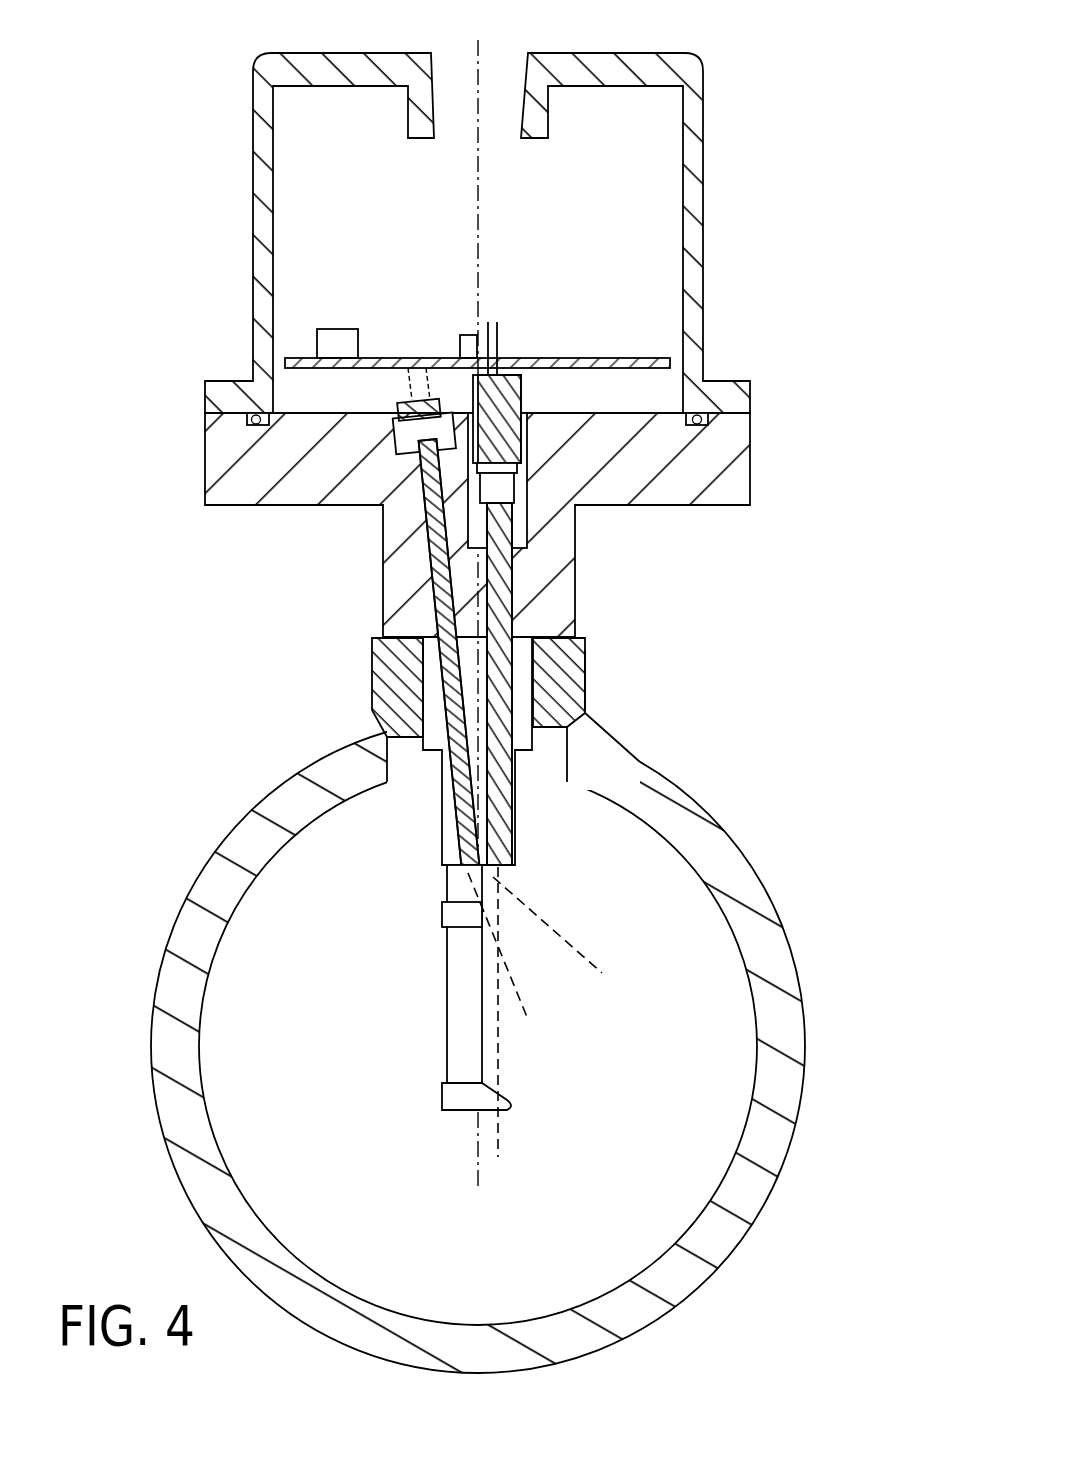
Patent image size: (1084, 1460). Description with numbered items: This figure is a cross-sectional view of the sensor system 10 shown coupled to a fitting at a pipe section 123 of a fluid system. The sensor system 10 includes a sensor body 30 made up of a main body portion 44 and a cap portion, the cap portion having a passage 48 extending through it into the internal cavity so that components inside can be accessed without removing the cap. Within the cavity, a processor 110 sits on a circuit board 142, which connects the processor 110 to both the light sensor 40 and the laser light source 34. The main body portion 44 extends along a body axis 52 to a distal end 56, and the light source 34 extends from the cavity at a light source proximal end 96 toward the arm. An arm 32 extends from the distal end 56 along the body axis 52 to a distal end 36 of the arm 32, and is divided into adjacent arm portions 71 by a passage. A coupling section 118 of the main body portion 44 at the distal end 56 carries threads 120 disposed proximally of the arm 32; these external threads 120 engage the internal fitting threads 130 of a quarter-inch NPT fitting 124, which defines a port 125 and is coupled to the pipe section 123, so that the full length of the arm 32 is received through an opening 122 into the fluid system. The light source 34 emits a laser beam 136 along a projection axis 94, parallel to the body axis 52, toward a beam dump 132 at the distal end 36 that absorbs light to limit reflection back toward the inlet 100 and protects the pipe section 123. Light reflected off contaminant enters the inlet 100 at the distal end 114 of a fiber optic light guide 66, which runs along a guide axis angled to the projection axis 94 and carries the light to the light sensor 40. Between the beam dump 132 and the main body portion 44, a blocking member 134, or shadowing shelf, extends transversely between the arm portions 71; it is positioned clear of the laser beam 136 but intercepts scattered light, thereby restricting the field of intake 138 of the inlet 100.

The sensor system 10 is at (772, 94).
The sensor body 30 is at (824, 404).
The arm 32 is at (447, 1042).
The light source 34 is at (530, 393).
The distal end of the arm 36 is at (432, 1128).
The light sensor 40 is at (393, 410).
The main body portion 44 is at (750, 457).
The passage 48 is at (433, 72).
The body axis 52 is at (478, 1127).
The distal end of the main body portion 56 is at (419, 757).
The fiber optic light guide 66 is at (422, 550).
The arm portions 71 is at (462, 1060).
The projection axis 94 is at (498, 1155).
The light source proximal end 96 is at (539, 412).
The inlet 100 is at (468, 868).
The processor 110 is at (320, 328).
The distal end of the fiber optic light guide 114 is at (457, 838).
The coupling section 118 is at (542, 675).
The threads 120 is at (540, 700).
The opening 122 is at (417, 796).
The pipe section 123 is at (801, 1134).
The quarter-inch NPT fitting 124 is at (372, 680).
The port 125 is at (419, 660).
The internal fitting threads 130 is at (518, 640).
The beam dump 132 is at (506, 1112).
The blocking member 134 is at (443, 921).
The laser beam 136 is at (503, 1055).
The field of intake 138 is at (585, 910).
The circuit board 142 is at (618, 357).